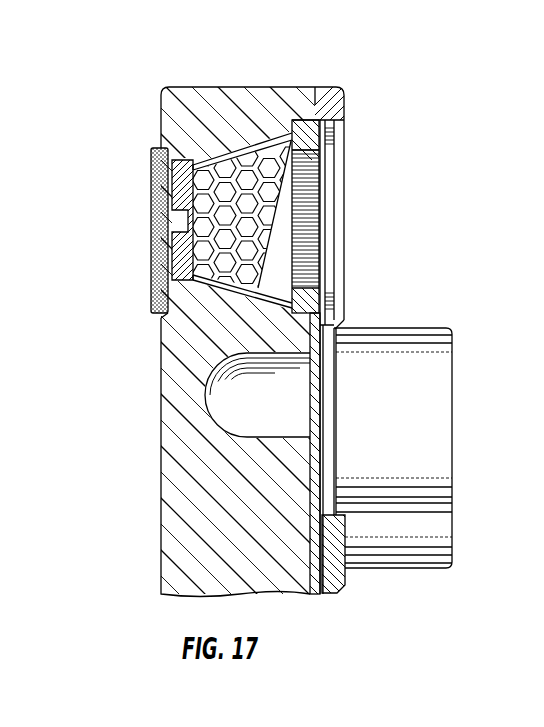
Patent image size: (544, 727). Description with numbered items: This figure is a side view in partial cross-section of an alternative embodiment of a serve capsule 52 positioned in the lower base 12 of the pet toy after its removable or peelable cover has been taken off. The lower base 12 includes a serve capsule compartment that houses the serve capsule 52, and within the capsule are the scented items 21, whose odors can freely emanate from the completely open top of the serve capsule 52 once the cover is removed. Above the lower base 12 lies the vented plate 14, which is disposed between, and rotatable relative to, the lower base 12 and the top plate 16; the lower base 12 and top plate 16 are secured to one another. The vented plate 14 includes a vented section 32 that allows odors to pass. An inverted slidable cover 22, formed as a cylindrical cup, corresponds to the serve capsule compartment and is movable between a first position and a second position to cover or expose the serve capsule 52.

The lower base 12 is at (167, 467).
The vented plate 14 is at (315, 598).
The top plate 16 is at (333, 588).
The scented items 21 is at (226, 178).
The inverted slidable cover 22 is at (443, 423).
The vented section 32 is at (321, 212).
The serve capsule 52 is at (270, 177).